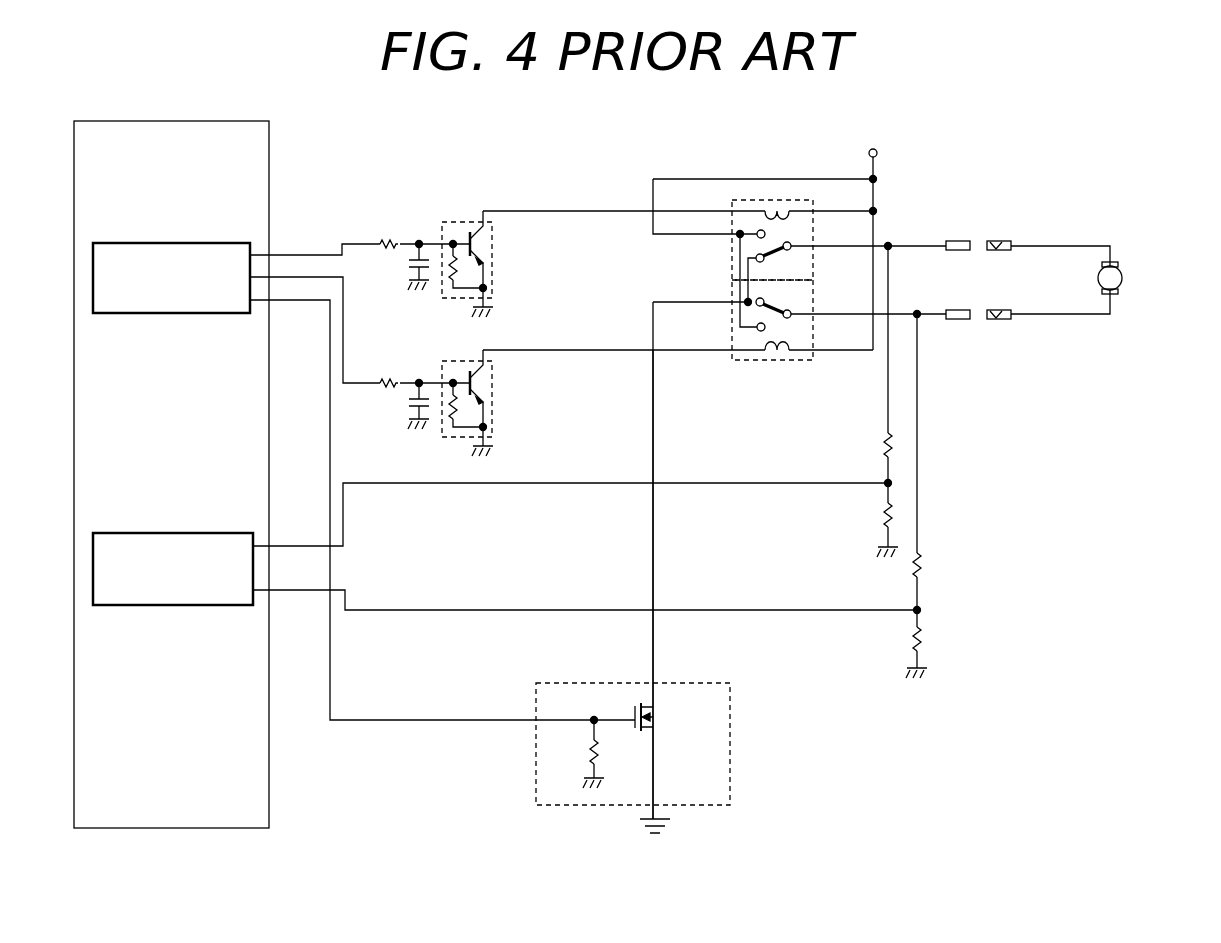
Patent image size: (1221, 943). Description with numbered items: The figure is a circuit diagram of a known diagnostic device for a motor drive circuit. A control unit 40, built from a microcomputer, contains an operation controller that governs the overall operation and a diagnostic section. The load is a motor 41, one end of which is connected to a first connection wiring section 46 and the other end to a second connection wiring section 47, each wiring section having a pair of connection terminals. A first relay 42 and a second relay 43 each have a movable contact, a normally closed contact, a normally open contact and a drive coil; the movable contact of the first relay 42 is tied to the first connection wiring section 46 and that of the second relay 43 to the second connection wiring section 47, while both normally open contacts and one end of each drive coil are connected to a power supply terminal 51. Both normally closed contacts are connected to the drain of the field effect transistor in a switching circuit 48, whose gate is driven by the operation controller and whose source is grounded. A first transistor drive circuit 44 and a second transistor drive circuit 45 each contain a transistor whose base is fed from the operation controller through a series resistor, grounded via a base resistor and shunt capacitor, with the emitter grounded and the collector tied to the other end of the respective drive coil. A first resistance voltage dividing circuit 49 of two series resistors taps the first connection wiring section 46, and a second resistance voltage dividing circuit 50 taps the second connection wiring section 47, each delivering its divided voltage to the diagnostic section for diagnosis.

The control unit 40 is at (270, 162).
The motor 41 is at (1122, 276).
The first relay 42 is at (714, 218).
The second relay 43 is at (714, 343).
The first transistor drive circuit 44 is at (504, 264).
The second transistor drive circuit 45 is at (504, 403).
The first connection wiring section 46 is at (998, 238).
The second connection wiring section 47 is at (1012, 323).
The switching circuit 48 is at (657, 591).
The first resistance voltage dividing circuit 49 is at (900, 401).
The second resistance voltage dividing circuit 50 is at (960, 496).
The power supply terminal 51 is at (877, 151).